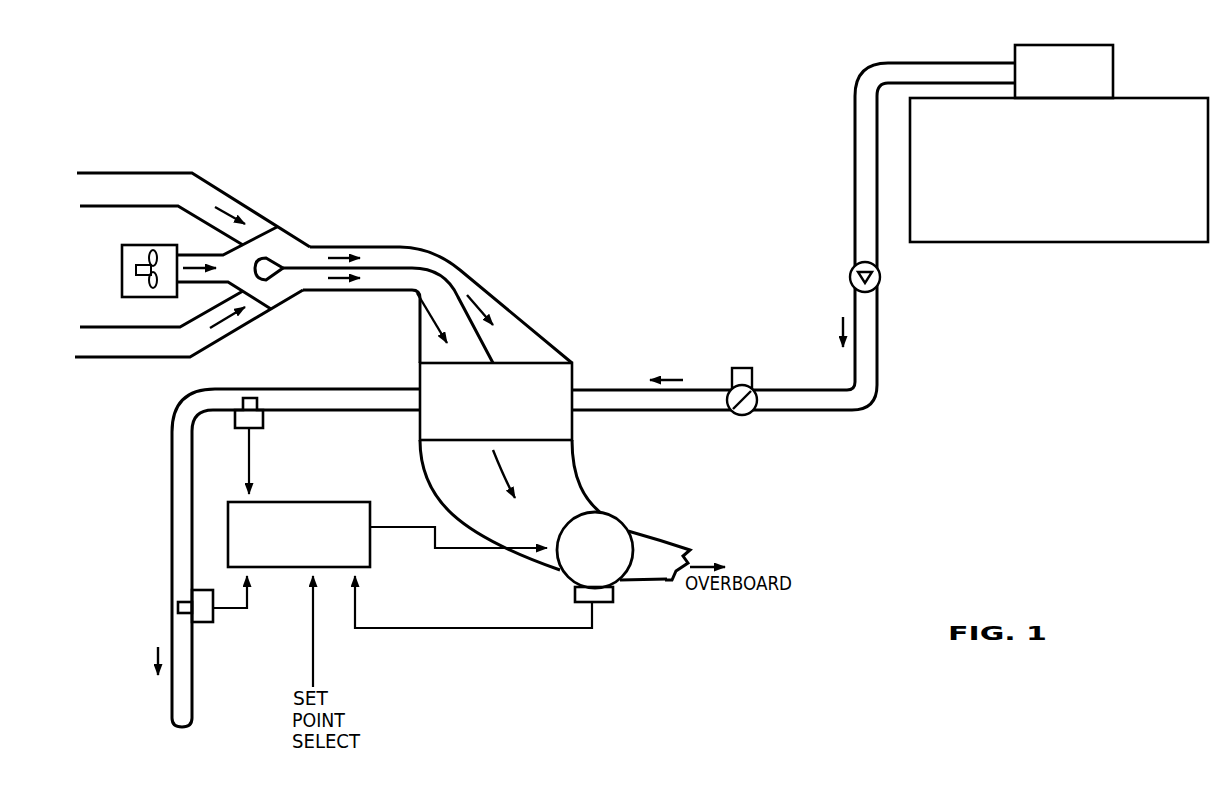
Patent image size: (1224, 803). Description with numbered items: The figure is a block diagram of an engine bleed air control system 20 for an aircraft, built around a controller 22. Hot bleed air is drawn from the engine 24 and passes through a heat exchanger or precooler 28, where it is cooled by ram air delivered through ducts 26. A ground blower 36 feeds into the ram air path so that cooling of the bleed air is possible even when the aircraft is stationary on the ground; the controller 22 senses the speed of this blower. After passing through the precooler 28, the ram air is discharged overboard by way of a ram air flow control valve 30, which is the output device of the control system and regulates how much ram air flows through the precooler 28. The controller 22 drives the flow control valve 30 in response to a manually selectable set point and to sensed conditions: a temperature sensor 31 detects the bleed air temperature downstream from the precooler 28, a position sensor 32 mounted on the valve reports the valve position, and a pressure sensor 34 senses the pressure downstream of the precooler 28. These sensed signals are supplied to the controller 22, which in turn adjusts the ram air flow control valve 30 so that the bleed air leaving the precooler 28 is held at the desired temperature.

The control system 20 is at (635, 301).
The controller 22 is at (365, 558).
The engine 24 is at (1060, 193).
The ducts 26 is at (213, 184).
The precooler 28 is at (493, 418).
The ram air flow control valve 30 is at (610, 530).
The temperature sensor 31 is at (263, 420).
The position sensor 32 is at (613, 597).
The pressure sensor 34 is at (213, 622).
The ground blower 36 is at (122, 281).